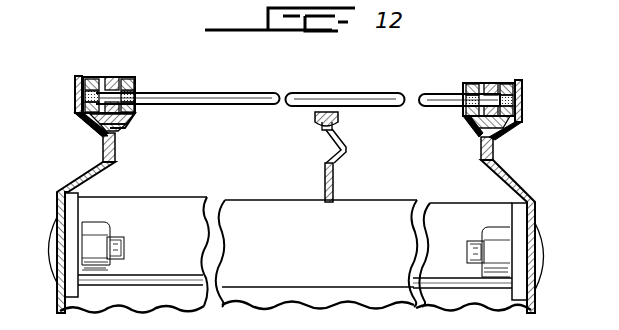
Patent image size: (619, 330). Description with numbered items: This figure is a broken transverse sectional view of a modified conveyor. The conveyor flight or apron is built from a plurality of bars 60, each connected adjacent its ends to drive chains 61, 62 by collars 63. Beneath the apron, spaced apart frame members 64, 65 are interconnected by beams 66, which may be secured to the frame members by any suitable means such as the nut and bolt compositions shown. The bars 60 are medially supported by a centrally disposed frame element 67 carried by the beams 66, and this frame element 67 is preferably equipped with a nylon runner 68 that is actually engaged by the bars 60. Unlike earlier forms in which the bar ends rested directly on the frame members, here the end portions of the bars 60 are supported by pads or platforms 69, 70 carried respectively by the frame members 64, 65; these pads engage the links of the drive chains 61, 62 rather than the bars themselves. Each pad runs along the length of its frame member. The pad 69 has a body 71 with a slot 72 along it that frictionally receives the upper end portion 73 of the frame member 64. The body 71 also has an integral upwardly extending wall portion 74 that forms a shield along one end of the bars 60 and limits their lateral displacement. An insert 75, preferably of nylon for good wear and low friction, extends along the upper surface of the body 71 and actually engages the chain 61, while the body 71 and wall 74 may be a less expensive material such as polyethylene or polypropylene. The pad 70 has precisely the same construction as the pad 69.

The bars 60 is at (385, 92).
The drive chain 61 is at (108, 77).
The drive chain 62 is at (487, 83).
The collars 63 is at (125, 80).
The frame member 64 is at (72, 178).
The frame member 65 is at (530, 188).
The beams 66 is at (256, 205).
The frame element 67 is at (336, 173).
The nylon runner 68 is at (340, 119).
The pad 69 is at (85, 122).
The pad 70 is at (503, 131).
The body 71 is at (123, 123).
The slot 72 is at (115, 136).
The upper end portion 73 is at (104, 137).
The wall portion 74 is at (76, 90).
The insert 75 is at (122, 114).